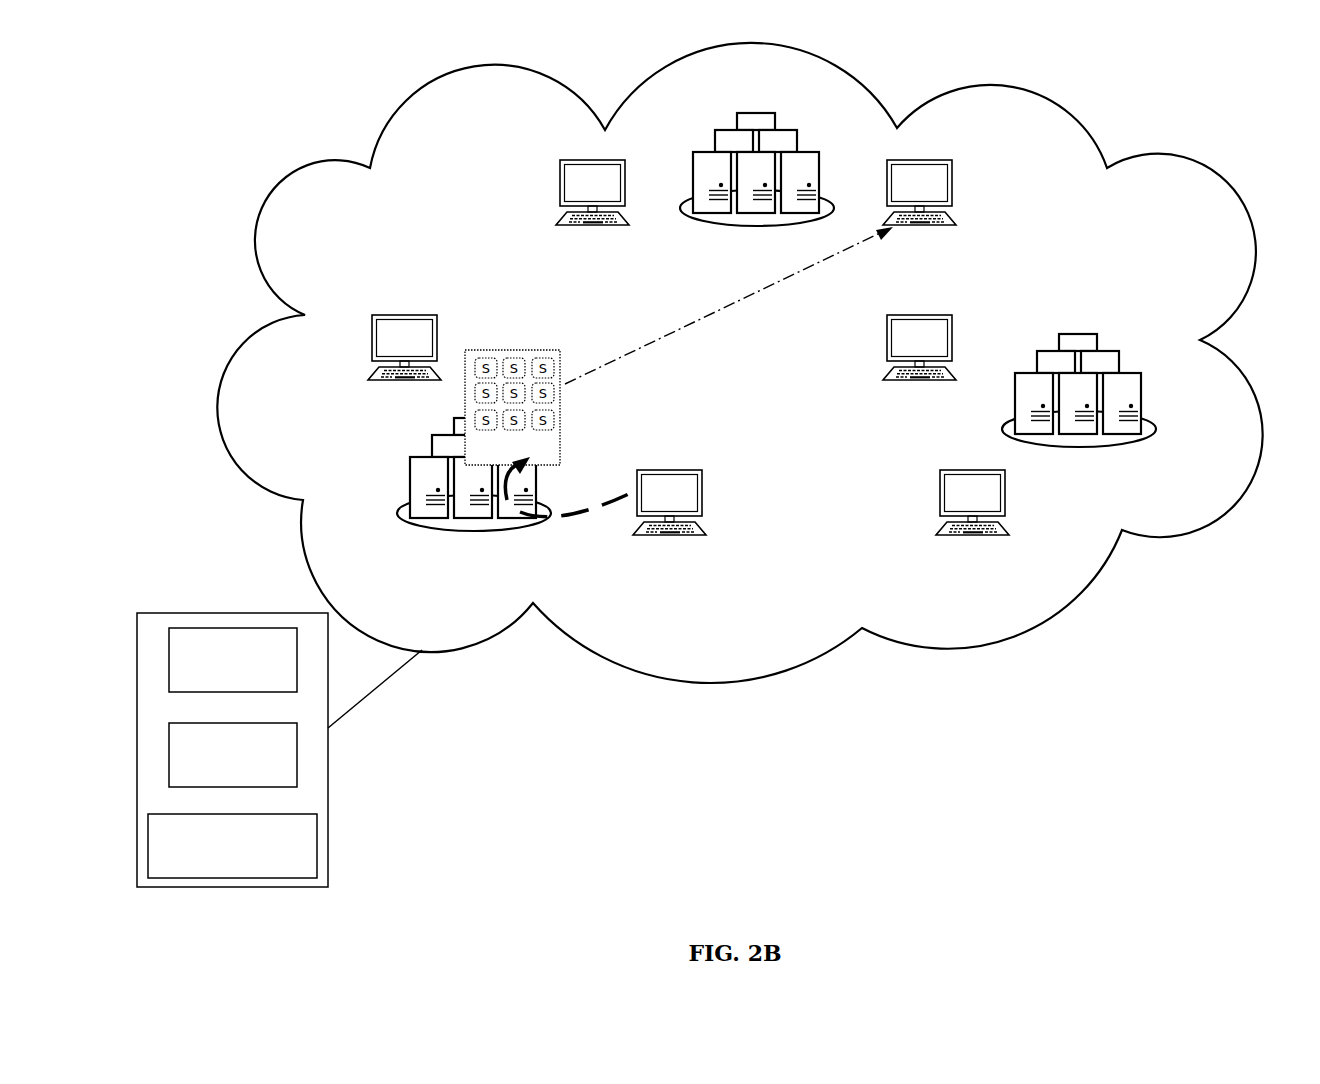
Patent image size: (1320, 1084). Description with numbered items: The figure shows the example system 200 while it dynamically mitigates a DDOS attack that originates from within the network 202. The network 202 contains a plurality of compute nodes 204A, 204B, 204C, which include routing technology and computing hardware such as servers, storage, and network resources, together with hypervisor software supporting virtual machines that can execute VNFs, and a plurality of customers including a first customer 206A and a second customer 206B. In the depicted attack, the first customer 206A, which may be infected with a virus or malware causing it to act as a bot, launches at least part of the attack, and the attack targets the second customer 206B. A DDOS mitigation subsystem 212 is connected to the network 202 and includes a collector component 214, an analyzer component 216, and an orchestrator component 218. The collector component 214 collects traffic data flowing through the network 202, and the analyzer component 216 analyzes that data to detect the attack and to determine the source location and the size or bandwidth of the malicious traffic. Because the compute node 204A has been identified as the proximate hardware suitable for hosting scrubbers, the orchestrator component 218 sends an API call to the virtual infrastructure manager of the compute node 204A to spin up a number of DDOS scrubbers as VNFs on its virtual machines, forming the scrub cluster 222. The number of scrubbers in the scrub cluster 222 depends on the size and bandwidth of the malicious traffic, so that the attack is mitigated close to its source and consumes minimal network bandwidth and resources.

The system 200 is at (283, 112).
The network 202 is at (1215, 517).
The compute node 204A is at (540, 522).
The compute node 204B is at (710, 228).
The compute node 204C is at (1118, 450).
The first customer 206A is at (700, 535).
The second customer 206B is at (950, 222).
The DDOS mitigation subsystem 212 is at (279, 762).
The collector component 214 is at (227, 692).
The analyzer component 216 is at (238, 787).
The orchestrator component 218 is at (238, 878).
The scrub cluster 222 is at (560, 418).